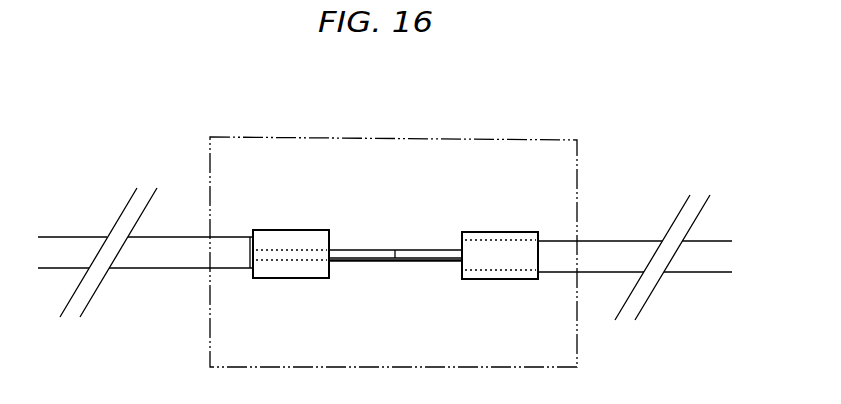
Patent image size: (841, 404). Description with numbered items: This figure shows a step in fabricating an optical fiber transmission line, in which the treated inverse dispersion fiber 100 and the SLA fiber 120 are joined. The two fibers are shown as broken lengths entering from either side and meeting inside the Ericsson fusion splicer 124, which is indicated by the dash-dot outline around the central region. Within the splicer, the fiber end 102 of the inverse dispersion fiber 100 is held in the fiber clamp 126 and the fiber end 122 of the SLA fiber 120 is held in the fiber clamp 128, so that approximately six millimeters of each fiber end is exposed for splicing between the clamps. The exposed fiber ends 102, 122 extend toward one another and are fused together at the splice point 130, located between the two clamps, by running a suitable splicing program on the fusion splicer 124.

The treated IDF×2 100 is at (63, 193).
The SLA fiber 120 is at (603, 205).
The Ericsson fusion splicer 124 is at (531, 139).
The fiber clamp 126 is at (278, 280).
The fiber clamp 128 is at (510, 281).
The fiber end 102 is at (365, 249).
The fiber end 122 is at (413, 249).
The splice point 130 is at (400, 263).